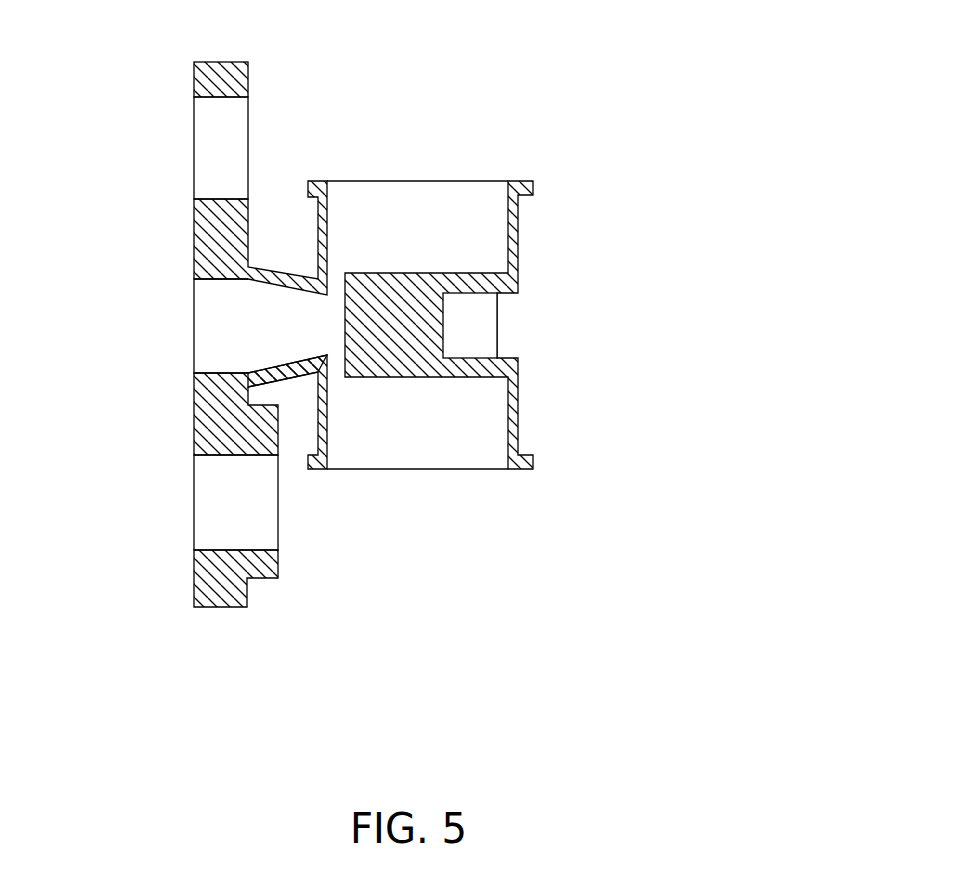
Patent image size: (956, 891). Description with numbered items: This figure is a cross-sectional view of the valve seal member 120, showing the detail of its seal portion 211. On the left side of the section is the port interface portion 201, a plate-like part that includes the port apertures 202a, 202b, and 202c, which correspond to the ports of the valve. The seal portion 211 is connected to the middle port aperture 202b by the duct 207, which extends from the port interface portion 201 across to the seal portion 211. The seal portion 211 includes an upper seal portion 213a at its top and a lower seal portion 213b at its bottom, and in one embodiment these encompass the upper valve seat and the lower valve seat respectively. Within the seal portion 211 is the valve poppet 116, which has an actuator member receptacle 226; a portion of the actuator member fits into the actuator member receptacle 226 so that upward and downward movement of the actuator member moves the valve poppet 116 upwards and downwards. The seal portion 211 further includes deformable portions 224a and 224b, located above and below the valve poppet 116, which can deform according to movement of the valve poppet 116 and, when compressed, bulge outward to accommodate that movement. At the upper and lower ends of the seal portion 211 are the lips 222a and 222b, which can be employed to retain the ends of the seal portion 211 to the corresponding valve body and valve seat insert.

The valve poppet 116 is at (403, 377).
The valve seal member 120 is at (580, 609).
The port interface portion 201 is at (237, 623).
The port aperture 202a is at (218, 152).
The port aperture 202b is at (218, 327).
The port aperture 202c is at (213, 500).
The duct 207 is at (293, 378).
The seal portion 211 is at (702, 333).
The upper seal portion 213a is at (419, 163).
The lower seal portion 213b is at (418, 497).
The lip 222a is at (286, 188).
The lip 222b is at (563, 462).
The deformable portion 224a is at (563, 237).
The deformable portion 224b is at (563, 427).
The actuator member receptacle 226 is at (563, 333).